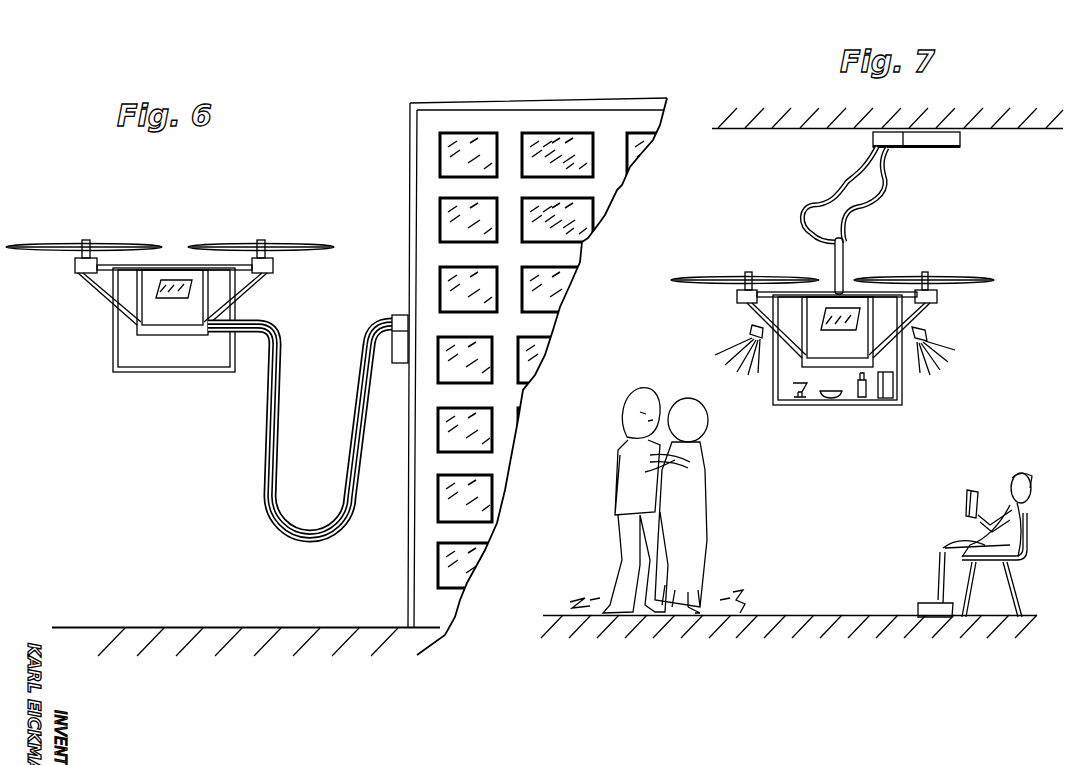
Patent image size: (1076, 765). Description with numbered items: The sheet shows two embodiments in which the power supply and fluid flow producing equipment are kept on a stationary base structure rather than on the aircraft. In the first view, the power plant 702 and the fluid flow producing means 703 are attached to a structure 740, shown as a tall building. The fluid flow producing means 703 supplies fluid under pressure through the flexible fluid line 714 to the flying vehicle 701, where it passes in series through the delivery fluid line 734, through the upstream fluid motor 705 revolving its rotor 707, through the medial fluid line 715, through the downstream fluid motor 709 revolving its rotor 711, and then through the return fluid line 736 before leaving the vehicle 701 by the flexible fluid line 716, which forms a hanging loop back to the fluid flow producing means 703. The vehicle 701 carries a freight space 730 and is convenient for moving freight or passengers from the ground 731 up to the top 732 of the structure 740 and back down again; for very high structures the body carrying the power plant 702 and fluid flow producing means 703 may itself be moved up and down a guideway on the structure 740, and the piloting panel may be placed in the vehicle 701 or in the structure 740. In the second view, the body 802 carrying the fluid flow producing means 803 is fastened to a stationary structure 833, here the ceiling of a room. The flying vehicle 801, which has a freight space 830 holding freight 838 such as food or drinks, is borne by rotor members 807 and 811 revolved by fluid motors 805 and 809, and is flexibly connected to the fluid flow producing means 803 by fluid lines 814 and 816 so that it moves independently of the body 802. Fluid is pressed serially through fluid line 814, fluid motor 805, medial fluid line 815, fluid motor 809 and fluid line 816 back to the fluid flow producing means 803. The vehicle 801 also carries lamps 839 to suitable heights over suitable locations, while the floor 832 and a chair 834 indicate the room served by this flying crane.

In FIG. 6, the flying vehicle 701 is at (152, 296).
In FIG. 6, the power plant 702 is at (395, 350).
In FIG. 6, the fluid flow producing means 703 is at (400, 315).
In FIG. 6, the upstream fluid motor 705 is at (75, 268).
In FIG. 6, the rotor 707 is at (55, 245).
In FIG. 6, the downstream fluid motor 709 is at (273, 265).
In FIG. 6, the rotor 711 is at (292, 244).
In FIG. 6, the flexible fluid line 714 is at (345, 500).
In FIG. 6, the medial fluid line 715 is at (172, 264).
In FIG. 6, the flexible fluid line 716 is at (337, 500).
In FIG. 6, the freight space 730 is at (155, 358).
In FIG. 6, the ground 731 is at (235, 627).
In FIG. 6, the top of the structure 732 is at (517, 102).
In FIG. 6, the delivery fluid line 734 is at (88, 288).
In FIG. 6, the return fluid line 736 is at (250, 290).
In FIG. 6, the structure 740 is at (420, 213).
In FIG. 7, the flying vehicle 801 is at (823, 318).
In FIG. 7, the body 802 is at (943, 143).
In FIG. 7, the fluid flow producing means 803 is at (873, 137).
In FIG. 7, the fluid motor 805 is at (737, 295).
In FIG. 7, the rotor member 807 is at (701, 277).
In FIG. 7, the fluid motor 809 is at (937, 298).
In FIG. 7, the rotor member 811 is at (960, 277).
In FIG. 7, the fluid line 814 is at (885, 188).
In FIG. 7, the medial fluid line 815 is at (845, 292).
In FIG. 7, the fluid line 816 is at (825, 197).
In FIG. 7, the freight space 830 is at (812, 383).
In FIG. 7, the floor 832 is at (795, 615).
In FIG. 7, the stationary structure 833 is at (1018, 130).
In FIG. 7, the chair with seated person 834 is at (997, 585).
In FIG. 7, the freight 838 is at (860, 397).
In FIG. 7, the lamps 839 is at (750, 330).